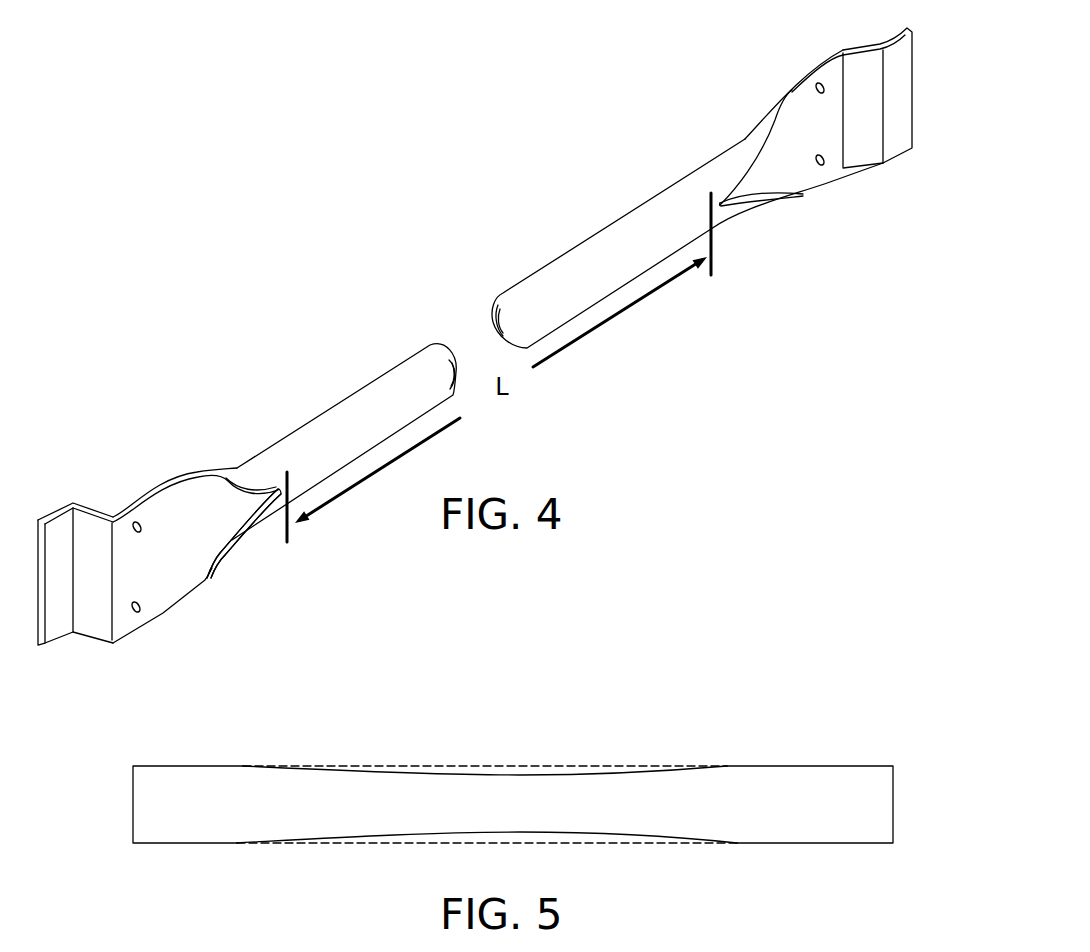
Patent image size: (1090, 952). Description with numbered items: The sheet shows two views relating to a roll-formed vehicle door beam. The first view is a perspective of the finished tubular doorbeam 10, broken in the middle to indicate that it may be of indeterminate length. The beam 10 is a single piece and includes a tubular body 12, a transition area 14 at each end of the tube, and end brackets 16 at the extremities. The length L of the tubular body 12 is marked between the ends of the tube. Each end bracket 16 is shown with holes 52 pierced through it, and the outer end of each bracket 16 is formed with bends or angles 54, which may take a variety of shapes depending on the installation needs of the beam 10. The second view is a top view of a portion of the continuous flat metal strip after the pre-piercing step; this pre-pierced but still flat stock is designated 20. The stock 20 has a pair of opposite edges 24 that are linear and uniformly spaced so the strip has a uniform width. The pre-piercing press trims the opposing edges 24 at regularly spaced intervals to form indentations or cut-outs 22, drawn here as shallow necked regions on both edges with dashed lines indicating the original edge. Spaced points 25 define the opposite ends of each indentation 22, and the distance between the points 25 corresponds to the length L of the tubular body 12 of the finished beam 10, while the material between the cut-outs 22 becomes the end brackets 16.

In FIG. 4, the tubular doorbeam 10 is at (377, 242).
In FIG. 4, the tubular body 12 is at (590, 238).
In FIG. 4, the transition area 14 is at (237, 537).
In FIG. 4, the end bracket 16 is at (167, 473).
In FIG. 4, the hole 52 is at (133, 525).
In FIG. 4, the bends or angles 54 is at (868, 32).
In FIG. 5, the pre-pierced flat stock 20 is at (670, 712).
In FIG. 5, the indentations or cut-outs 22 is at (518, 775).
In FIG. 5, the opposite edges 24 is at (203, 766).
In FIG. 5, the spaced points 25 is at (243, 766).